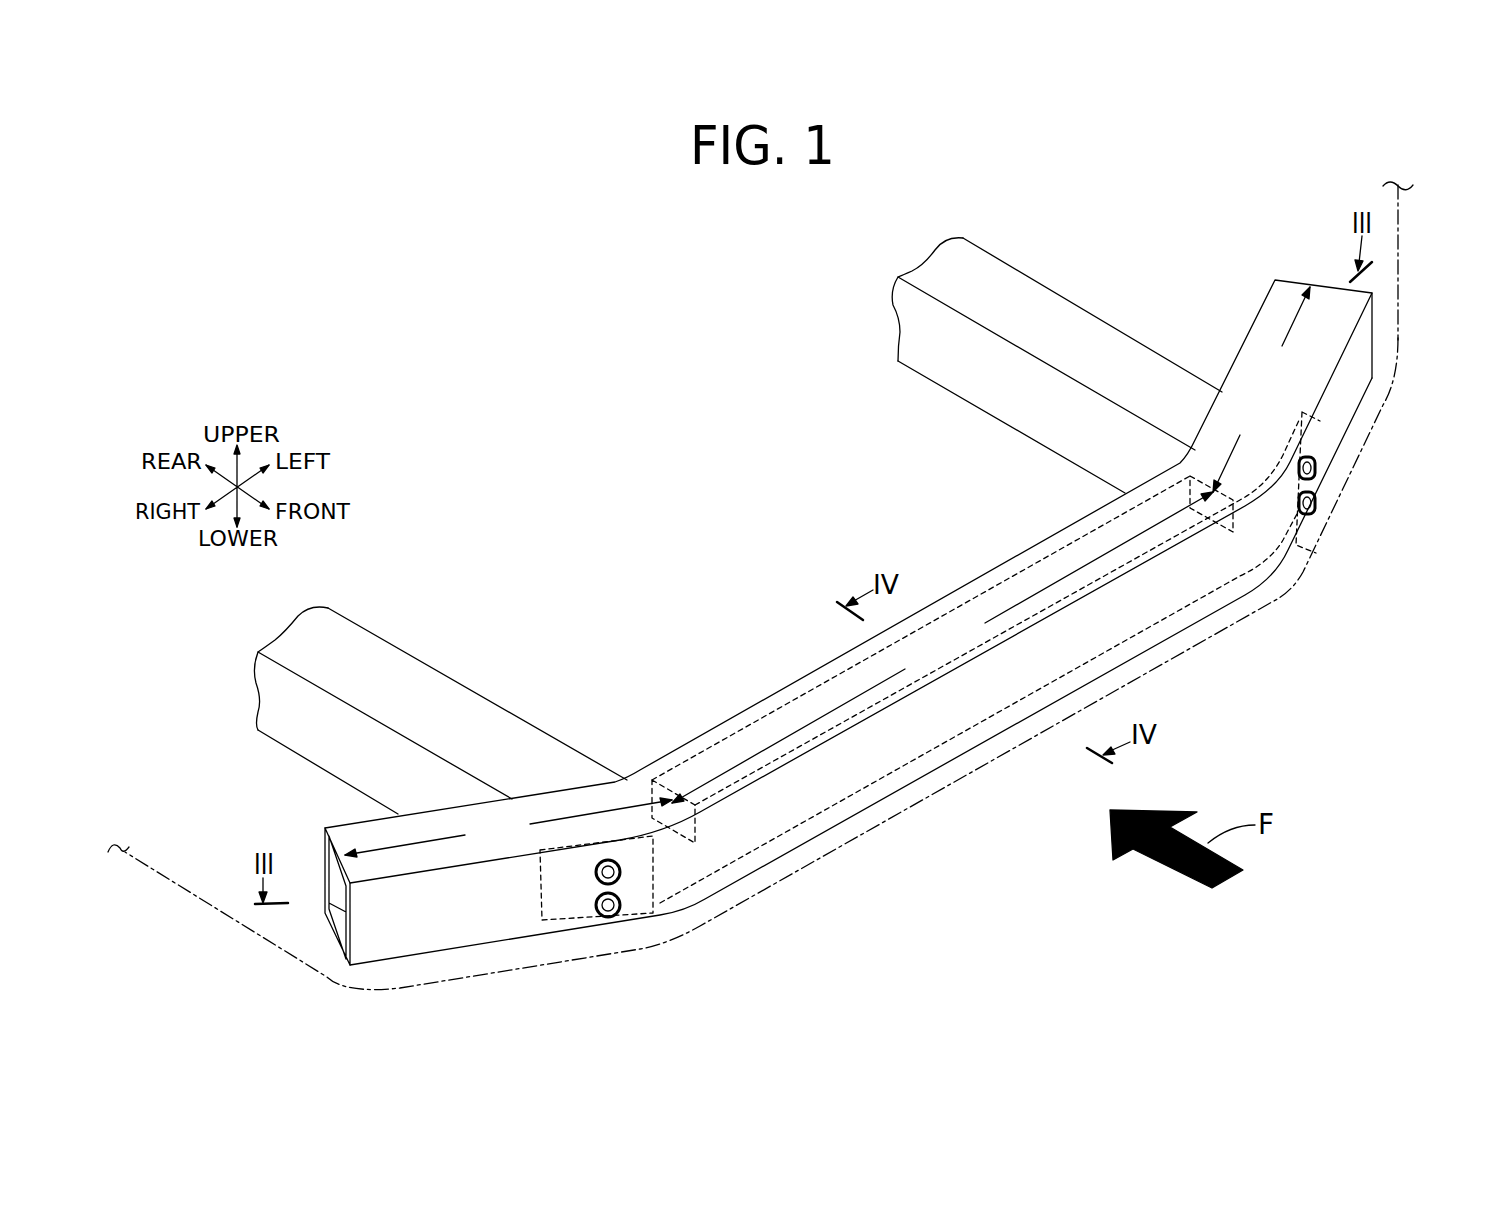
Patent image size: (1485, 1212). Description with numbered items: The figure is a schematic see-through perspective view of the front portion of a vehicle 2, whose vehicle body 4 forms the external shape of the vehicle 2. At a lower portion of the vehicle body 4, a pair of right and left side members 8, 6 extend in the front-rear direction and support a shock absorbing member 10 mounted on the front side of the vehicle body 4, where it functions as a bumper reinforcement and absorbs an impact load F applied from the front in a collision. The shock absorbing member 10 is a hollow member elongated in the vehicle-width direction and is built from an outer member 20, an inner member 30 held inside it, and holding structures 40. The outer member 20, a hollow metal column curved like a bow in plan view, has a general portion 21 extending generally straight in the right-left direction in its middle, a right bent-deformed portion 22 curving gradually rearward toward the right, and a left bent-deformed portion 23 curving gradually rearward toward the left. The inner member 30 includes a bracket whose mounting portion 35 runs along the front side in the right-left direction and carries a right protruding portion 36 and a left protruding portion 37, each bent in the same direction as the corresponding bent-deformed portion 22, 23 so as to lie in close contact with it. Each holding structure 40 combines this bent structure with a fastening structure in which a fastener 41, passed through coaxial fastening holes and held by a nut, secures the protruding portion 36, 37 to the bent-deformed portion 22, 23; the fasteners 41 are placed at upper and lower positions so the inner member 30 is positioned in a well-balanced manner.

The vehicle 2 is at (1410, 412).
The vehicle body 4 is at (1400, 297).
The left side member 6 is at (420, 697).
The right side member 8 is at (980, 367).
The shock absorbing member 10 is at (790, 628).
The outer member 20 is at (737, 715).
The general portion 21 is at (942, 647).
The right bent-deformed portion 22 is at (508, 827).
The left bent-deformed portion 23 is at (1261, 389).
The inner member 30 is at (790, 703).
The mounting portion 35 is at (927, 730).
The right protruding portion 36 is at (558, 888).
The left protruding portion 37 is at (1310, 430).
The holding structure 40 is at (588, 833).
The fastener 41 is at (612, 907).